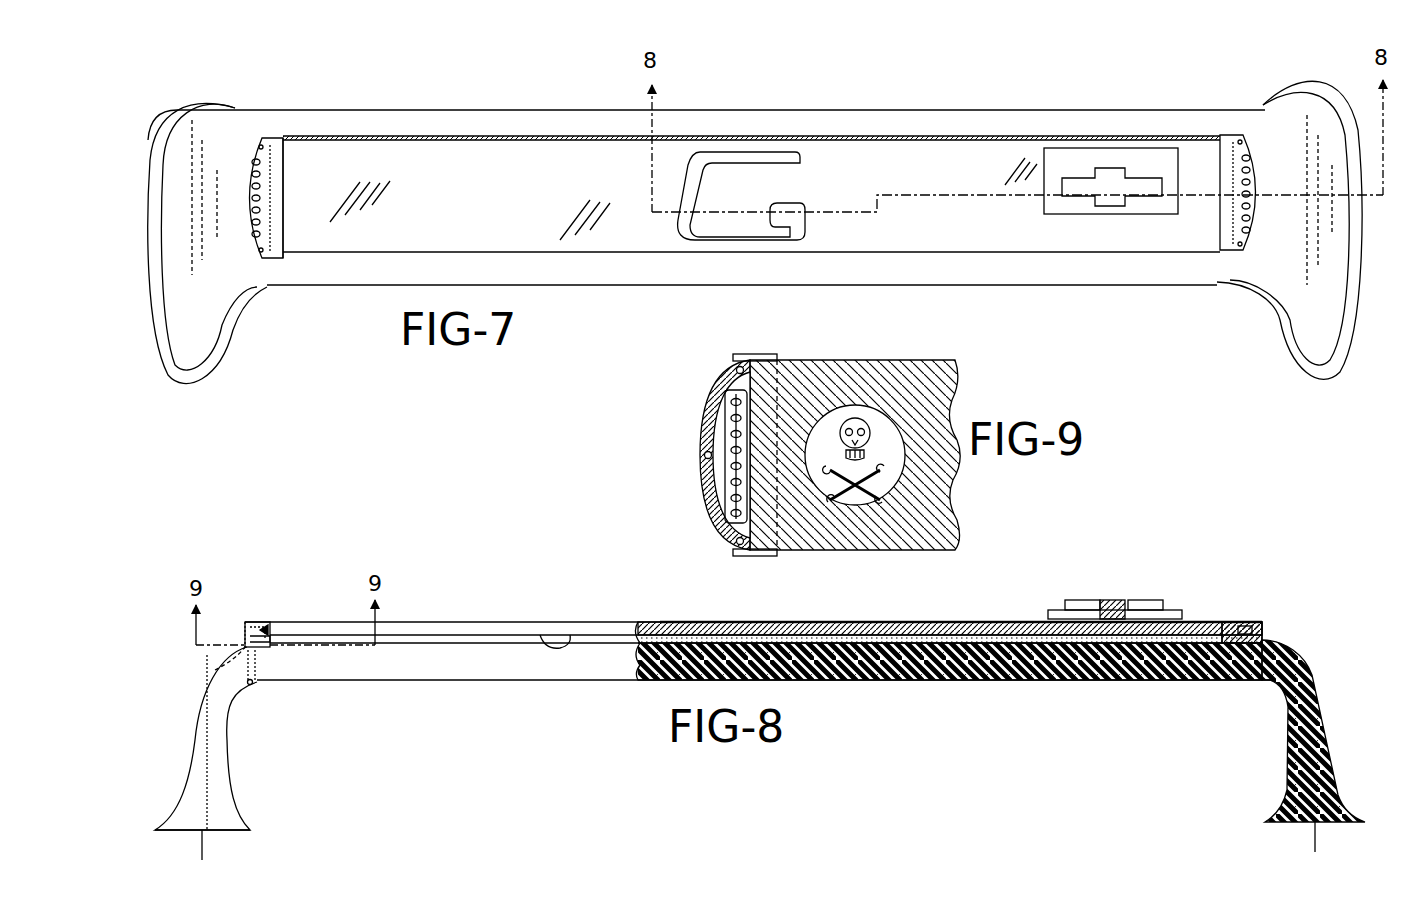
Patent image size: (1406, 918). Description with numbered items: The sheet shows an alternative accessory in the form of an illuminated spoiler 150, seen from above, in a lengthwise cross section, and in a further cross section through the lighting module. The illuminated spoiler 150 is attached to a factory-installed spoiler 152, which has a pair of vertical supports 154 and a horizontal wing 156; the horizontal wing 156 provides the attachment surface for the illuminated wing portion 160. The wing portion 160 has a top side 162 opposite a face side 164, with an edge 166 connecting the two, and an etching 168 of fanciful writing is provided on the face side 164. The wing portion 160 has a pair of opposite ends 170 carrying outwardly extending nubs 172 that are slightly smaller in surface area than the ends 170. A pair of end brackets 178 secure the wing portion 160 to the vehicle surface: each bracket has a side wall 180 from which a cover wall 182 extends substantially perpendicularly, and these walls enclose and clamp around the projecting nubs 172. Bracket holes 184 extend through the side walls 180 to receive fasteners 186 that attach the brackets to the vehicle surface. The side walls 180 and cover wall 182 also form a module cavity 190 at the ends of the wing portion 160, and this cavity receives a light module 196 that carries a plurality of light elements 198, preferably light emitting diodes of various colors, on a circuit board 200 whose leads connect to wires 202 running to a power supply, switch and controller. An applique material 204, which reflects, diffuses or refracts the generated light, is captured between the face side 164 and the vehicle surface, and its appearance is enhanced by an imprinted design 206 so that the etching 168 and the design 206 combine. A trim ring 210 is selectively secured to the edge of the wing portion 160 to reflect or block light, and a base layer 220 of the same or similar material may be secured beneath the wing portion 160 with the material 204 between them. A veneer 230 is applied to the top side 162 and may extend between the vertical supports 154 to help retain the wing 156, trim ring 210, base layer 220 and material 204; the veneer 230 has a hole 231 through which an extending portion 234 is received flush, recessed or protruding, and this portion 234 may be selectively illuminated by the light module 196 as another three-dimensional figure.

In FIG. 7, the illuminated spoiler 150 is at (955, 90).
In FIG. 7, the factory-installed spoiler 152 is at (472, 105).
In FIG. 8, the factory-installed spoiler 152 is at (990, 682).
In FIG. 7, the vertical supports 154 is at (182, 98).
In FIG. 8, the vertical supports 154 is at (230, 812).
In FIG. 7, the horizontal wing 156 is at (375, 130).
In FIG. 8, the horizontal wing 156 is at (432, 682).
In FIG. 7, the illuminated wing portion 160 is at (888, 135).
In FIG. 7, the top side 162 is at (490, 210).
In FIG. 8, the top side 162 is at (1000, 620).
In FIG. 8, the face side 164 is at (562, 635).
In FIG. 8, the edge 166 is at (472, 622).
In FIG. 7, the etching 168 is at (770, 160).
In FIG. 8, the etching 168 is at (790, 622).
In FIG. 8, the opposite ends 170 is at (1238, 622).
In FIG. 8, the nubs 172 is at (1225, 622).
In FIG. 7, the end brackets 178 is at (292, 263).
In FIG. 7, the side wall 180 is at (262, 136).
In FIG. 7, the cover wall 182 is at (284, 172).
In FIG. 8, the cover wall 182 is at (275, 623).
In FIG. 8, the bracket holes 184 is at (210, 672).
In FIG. 8, the fasteners 186 is at (255, 685).
In FIG. 9, the module cavity 190 is at (725, 495).
In FIG. 9, the light module 196 is at (732, 448).
In FIG. 8, the light module 196 is at (280, 650).
In FIG. 9, the light elements 198 is at (728, 410).
In FIG. 9, the circuit board 200 is at (730, 465).
In FIG. 8, the wires 202 is at (205, 850).
In FIG. 9, the applique material 204 is at (935, 405).
In FIG. 8, the applique material 204 is at (520, 645).
In FIG. 9, the imprinted design 206 is at (872, 428).
In FIG. 8, the imprinted design 206 is at (415, 640).
In FIG. 7, the trim ring 210 is at (432, 136).
In FIG. 8, the base layer 220 is at (598, 647).
In FIG. 7, the veneer 230 is at (1108, 215).
In FIG. 8, the veneer 230 is at (1057, 610).
In FIG. 8, the hole 231 is at (1125, 600).
In FIG. 7, the extending portion 234 is at (1112, 172).
In FIG. 8, the extending portion 234 is at (1113, 600).